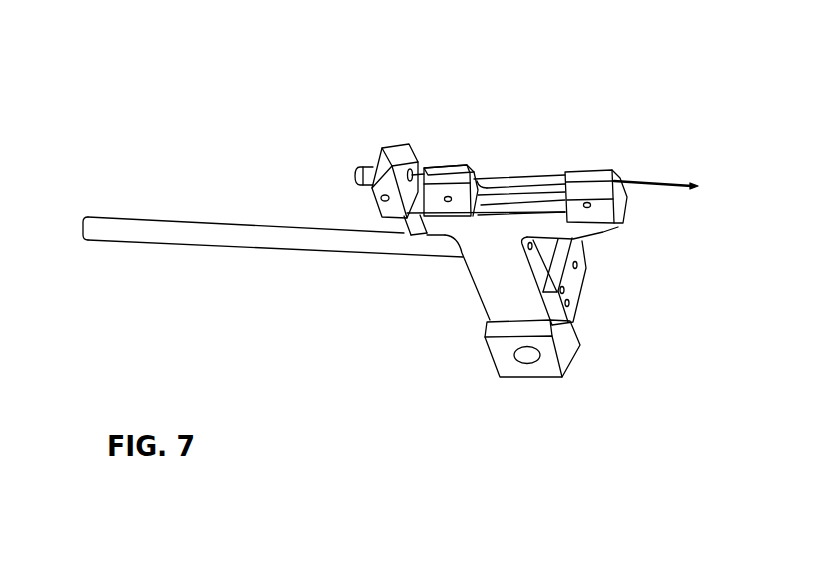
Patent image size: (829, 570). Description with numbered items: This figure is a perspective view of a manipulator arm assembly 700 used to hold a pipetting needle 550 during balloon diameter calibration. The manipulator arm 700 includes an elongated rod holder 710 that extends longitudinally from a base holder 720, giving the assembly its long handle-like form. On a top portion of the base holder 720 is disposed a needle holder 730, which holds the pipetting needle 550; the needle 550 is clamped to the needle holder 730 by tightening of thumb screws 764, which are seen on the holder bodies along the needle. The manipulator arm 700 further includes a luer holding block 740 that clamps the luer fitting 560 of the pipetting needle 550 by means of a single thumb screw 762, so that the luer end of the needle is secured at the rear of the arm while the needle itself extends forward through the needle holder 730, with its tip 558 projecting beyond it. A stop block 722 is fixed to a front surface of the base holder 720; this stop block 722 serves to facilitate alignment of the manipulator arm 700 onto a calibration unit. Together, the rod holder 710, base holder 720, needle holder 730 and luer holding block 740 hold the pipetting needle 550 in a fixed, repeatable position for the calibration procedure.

The manipulator arm assembly 700 is at (134, 102).
The elongated rod holder 710 is at (128, 231).
The base holder 720 is at (492, 290).
The stop block 722 is at (572, 282).
The needle holder 730 is at (582, 174).
The luer holding block 740 is at (396, 152).
The pipetting needle 550 is at (503, 174).
The needle 558 is at (693, 182).
The luer fitting 560 is at (358, 165).
The thumb screw 762 is at (381, 199).
The thumb screws 764 is at (450, 203).